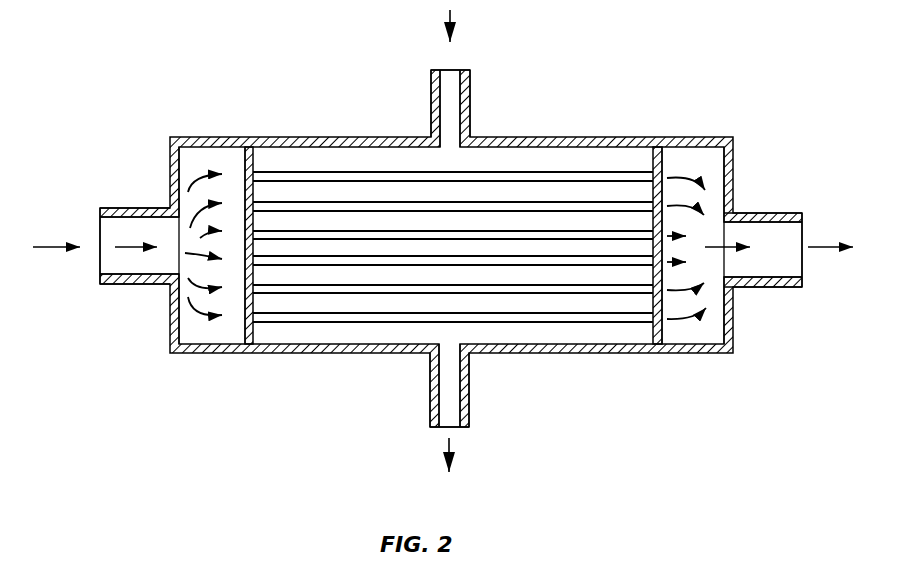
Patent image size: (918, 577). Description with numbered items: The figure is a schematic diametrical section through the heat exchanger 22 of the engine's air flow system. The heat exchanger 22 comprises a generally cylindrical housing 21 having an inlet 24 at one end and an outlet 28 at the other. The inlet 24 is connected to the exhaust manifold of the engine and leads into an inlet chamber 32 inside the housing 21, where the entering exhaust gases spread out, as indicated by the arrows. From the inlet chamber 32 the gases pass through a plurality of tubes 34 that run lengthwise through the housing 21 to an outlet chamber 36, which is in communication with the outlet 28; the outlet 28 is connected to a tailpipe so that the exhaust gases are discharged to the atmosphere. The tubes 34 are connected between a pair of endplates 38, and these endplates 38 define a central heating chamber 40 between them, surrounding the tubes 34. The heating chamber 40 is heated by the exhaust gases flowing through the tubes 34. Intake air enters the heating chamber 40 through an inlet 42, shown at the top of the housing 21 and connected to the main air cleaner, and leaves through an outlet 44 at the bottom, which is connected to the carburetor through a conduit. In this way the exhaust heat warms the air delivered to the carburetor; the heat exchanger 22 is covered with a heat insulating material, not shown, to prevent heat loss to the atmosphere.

The housing 21 is at (362, 137).
The heat exchanger 22 is at (247, 95).
The inlet 24 is at (101, 220).
The outlet 28 is at (805, 220).
The inlet chamber 32 is at (200, 155).
The tubes 34 is at (360, 232).
The outlet chamber 36 is at (700, 333).
The endplates 38 is at (242, 332).
The heating chamber 40 is at (544, 318).
The inlet 42 is at (455, 70).
The outlet 44 is at (443, 428).